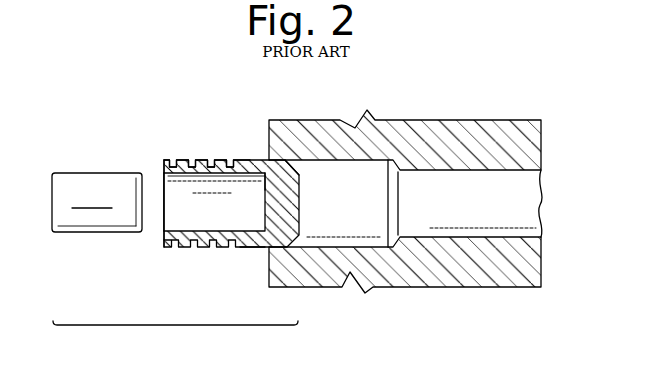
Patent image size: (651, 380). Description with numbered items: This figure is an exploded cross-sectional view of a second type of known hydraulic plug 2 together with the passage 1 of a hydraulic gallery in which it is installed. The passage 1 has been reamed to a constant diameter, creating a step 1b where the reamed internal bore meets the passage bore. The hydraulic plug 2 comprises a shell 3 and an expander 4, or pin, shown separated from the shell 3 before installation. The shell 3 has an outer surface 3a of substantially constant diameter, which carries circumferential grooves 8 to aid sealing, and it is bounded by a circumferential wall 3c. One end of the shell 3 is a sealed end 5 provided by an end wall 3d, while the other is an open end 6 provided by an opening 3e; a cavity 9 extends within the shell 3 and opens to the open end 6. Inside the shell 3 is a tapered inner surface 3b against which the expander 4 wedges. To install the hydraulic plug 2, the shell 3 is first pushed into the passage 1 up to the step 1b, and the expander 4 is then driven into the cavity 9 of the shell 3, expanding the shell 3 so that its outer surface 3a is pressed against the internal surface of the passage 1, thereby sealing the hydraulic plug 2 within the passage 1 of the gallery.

The passage 1 is at (527, 203).
The step 1b is at (397, 187).
The hydraulic plug 2 is at (175, 340).
The shell 3 is at (281, 233).
The outer surface 3a is at (164, 174).
The tapered inner surface 3b is at (163, 177).
The circumferential wall 3c is at (250, 247).
The end wall 3d is at (265, 176).
The opening 3e is at (164, 229).
The open end 6 is at (145, 266).
The expander 4 is at (55, 233).
The sealed end 5 is at (299, 175).
The circumferential grooves 8 is at (203, 160).
The cavity 9 is at (211, 216).